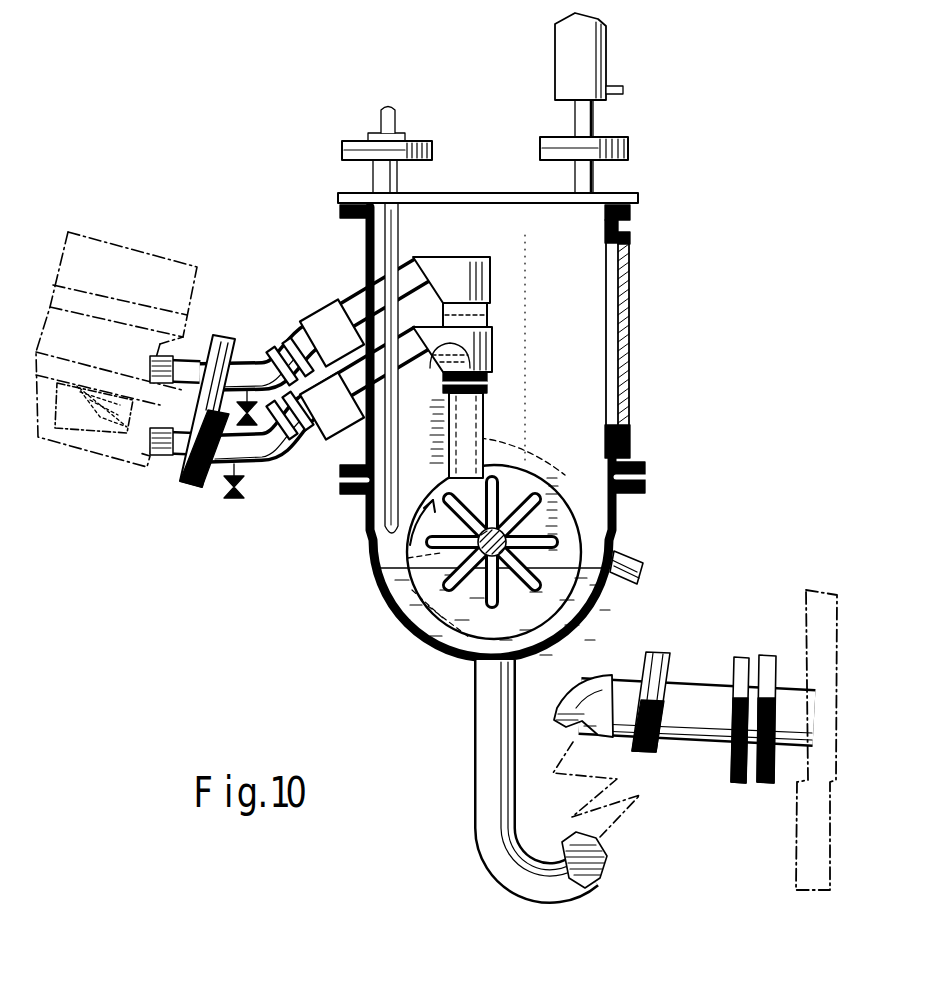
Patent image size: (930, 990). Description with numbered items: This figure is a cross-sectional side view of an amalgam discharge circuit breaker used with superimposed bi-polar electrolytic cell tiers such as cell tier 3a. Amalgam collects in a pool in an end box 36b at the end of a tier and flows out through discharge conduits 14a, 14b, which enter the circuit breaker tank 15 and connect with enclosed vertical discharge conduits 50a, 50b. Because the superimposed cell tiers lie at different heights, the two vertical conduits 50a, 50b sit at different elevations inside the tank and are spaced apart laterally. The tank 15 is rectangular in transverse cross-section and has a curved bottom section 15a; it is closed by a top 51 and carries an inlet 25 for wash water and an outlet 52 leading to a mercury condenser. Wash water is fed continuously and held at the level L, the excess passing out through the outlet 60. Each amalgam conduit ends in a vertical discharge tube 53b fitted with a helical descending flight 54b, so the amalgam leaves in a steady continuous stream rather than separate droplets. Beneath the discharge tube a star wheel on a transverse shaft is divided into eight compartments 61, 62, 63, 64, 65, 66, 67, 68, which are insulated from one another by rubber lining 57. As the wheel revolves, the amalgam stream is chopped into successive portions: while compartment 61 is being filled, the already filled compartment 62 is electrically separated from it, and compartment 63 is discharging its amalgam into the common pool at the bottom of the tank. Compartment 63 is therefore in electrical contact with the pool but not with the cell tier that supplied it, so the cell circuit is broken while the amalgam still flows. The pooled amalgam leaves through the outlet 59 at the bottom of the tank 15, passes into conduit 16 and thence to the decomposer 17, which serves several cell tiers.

The cell tier 3a is at (163, 250).
The discharge conduit 14a is at (255, 364).
The discharge conduit 14b is at (258, 465).
The amalgam discharge circuit breaker tank 15 is at (532, 447).
The curved bottom section 15a is at (408, 632).
The conduit 16 is at (618, 678).
The decomposer 17 is at (806, 632).
The inlet 25 is at (372, 183).
The end box 36b is at (110, 432).
The enclosed vertical discharge conduit 50a is at (488, 262).
The enclosed vertical discharge conduit 50b is at (493, 347).
The top 51 is at (455, 196).
The outlet 52 is at (594, 118).
The vertical discharge tube 53b is at (484, 408).
The helical descending flight 54b is at (494, 538).
The rubber insulation 57 is at (411, 552).
The outlet 59 is at (495, 669).
The outlet 60 is at (641, 563).
The compartment 61 is at (488, 506).
The compartment 62 is at (530, 500).
The compartment 63 is at (542, 530).
The compartment 64 is at (540, 575).
The compartment 65 is at (515, 575).
The compartment 66 is at (478, 580).
The compartment 67 is at (425, 572).
The compartment 68 is at (470, 535).
The wash water level L is at (610, 539).